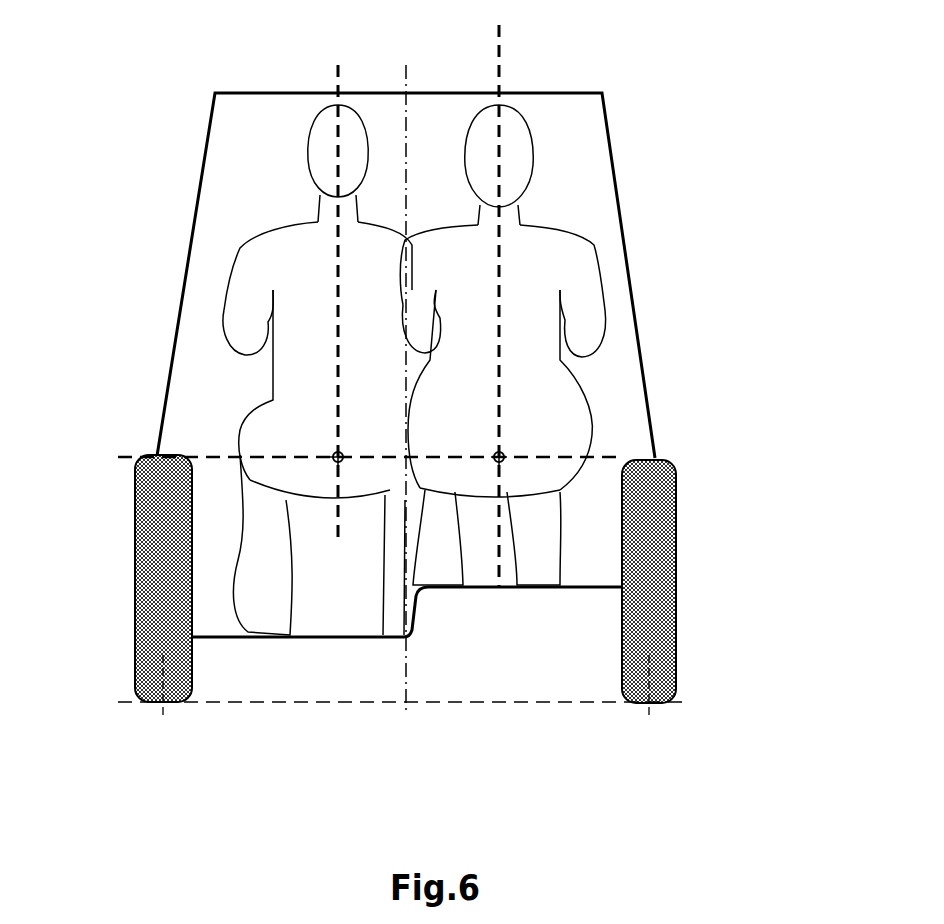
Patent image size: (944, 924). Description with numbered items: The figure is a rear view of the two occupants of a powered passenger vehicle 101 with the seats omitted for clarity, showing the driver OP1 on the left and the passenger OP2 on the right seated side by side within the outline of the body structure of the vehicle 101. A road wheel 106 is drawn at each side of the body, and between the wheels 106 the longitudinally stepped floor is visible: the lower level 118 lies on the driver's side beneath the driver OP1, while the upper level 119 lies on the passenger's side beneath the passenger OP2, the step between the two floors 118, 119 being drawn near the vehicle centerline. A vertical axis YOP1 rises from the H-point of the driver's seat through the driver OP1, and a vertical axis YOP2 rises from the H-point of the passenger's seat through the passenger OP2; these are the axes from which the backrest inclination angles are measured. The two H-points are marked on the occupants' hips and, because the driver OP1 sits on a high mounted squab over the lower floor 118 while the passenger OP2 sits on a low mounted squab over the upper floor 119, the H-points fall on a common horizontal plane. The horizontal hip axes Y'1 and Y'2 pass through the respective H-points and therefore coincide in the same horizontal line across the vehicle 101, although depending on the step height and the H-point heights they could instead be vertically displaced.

The powered passenger vehicle 101 is at (196, 165).
The road wheel 106 is at (135, 620).
The lower level floor 118 is at (318, 638).
The upper level floor 119 is at (582, 589).
The driver OP1 is at (220, 309).
The passenger OP2 is at (606, 308).
The vertical axis YOP1- YOP1 is at (338, 68).
The vertical axis YOP2- YOP2 is at (499, 50).
The element H-points is at (495, 460).
The hip pivot axis Y'1- Y'1 is at (284, 430).
The hip pivot axis Y'2- Y'2 is at (538, 430).